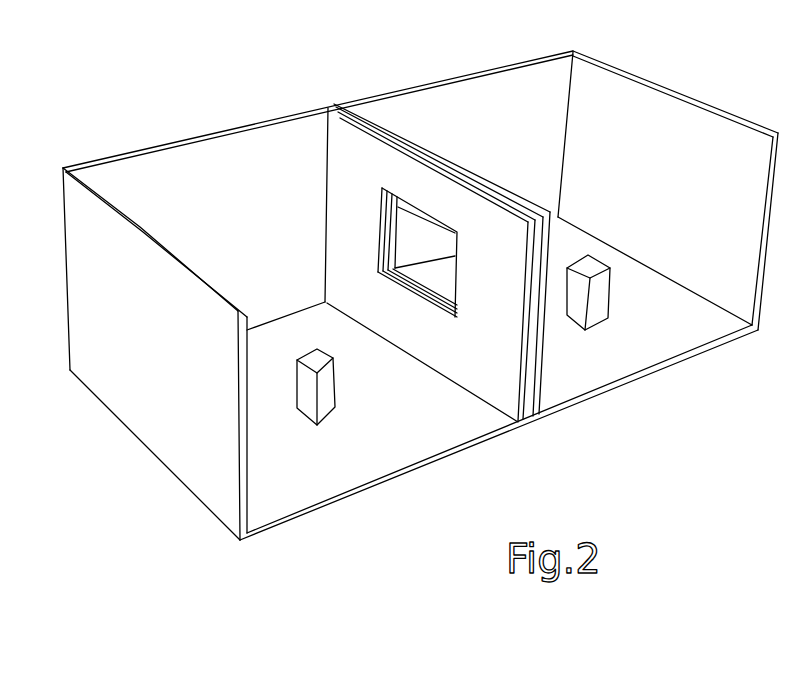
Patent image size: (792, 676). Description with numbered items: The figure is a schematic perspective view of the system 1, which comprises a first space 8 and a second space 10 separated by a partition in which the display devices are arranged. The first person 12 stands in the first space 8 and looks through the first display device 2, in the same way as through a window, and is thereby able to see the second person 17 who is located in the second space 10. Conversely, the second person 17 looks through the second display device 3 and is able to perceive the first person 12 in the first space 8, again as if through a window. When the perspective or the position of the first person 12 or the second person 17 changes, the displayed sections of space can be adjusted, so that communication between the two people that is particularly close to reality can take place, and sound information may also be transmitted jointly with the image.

The system 1 is at (420, 288).
The first display device 2 is at (442, 230).
The second display device 3 is at (433, 177).
The first space 8 is at (166, 354).
The second space 10 is at (535, 158).
The first person 12 is at (337, 396).
The second person 17 is at (607, 297).